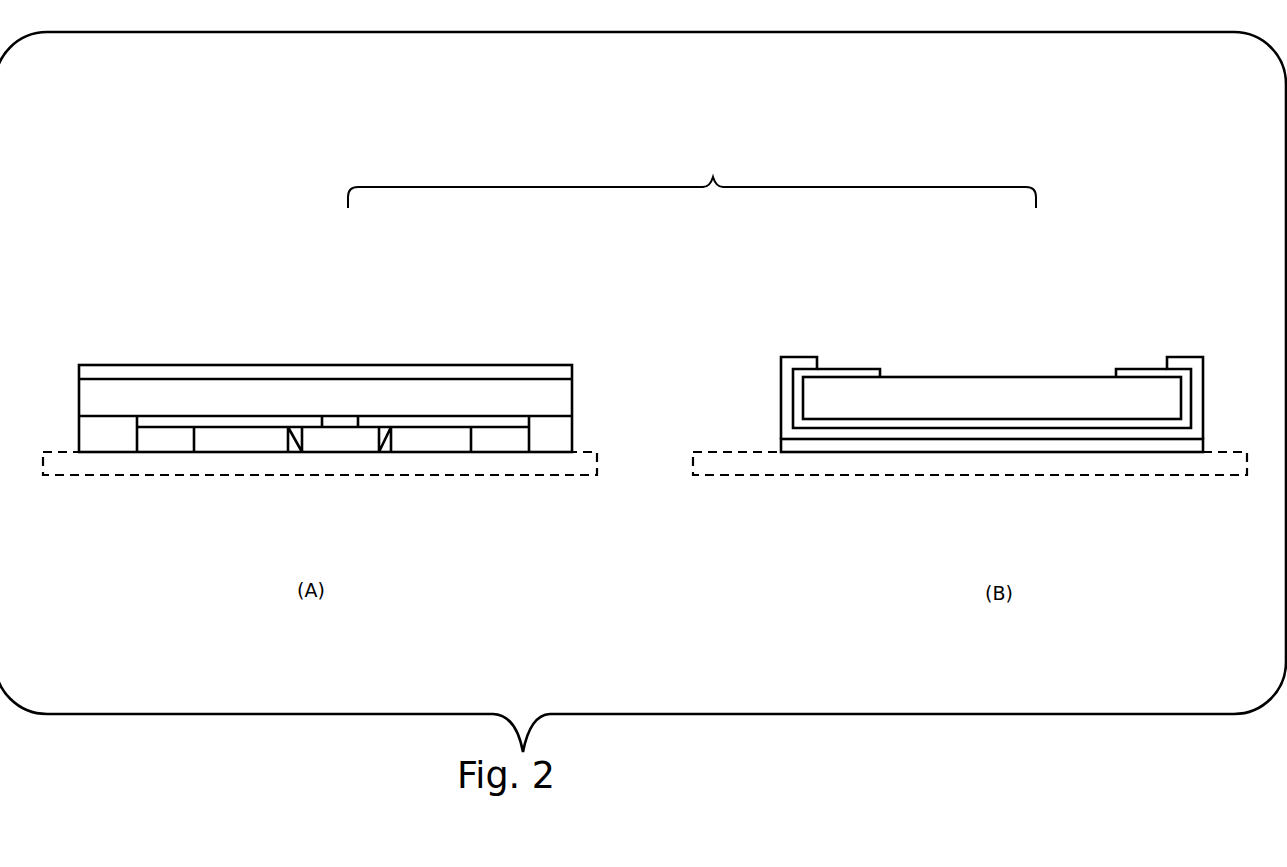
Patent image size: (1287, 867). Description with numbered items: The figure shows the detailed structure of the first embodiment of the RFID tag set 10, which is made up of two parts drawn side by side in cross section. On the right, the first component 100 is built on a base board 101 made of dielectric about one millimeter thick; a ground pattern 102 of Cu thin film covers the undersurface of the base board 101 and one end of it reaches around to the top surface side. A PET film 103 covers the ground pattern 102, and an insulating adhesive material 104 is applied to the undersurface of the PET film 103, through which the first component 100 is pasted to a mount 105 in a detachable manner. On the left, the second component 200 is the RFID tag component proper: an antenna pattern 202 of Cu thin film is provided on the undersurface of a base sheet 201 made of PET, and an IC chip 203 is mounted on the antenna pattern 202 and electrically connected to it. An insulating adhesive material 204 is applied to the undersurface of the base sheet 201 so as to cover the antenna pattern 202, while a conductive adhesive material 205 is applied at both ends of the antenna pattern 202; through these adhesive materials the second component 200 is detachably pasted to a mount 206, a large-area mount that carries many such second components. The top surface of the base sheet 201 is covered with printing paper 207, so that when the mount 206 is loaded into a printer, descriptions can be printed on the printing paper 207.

The RFID tag set 10 is at (692, 177).
The first component 100 is at (989, 306).
The base board 101 is at (1040, 390).
The ground pattern 102 is at (862, 372).
The PET film 103 is at (1198, 400).
The insulating adhesive material 104 is at (1198, 444).
The mount 105 is at (1138, 475).
The second component 200 is at (342, 290).
The base sheet 201 is at (557, 395).
The antenna pattern 202 is at (262, 420).
The IC chip 203 is at (343, 445).
The insulating adhesive material 204 is at (90, 437).
The conductive adhesive material 205 is at (171, 452).
The mount 206 is at (90, 475).
The printing paper 207 is at (487, 372).